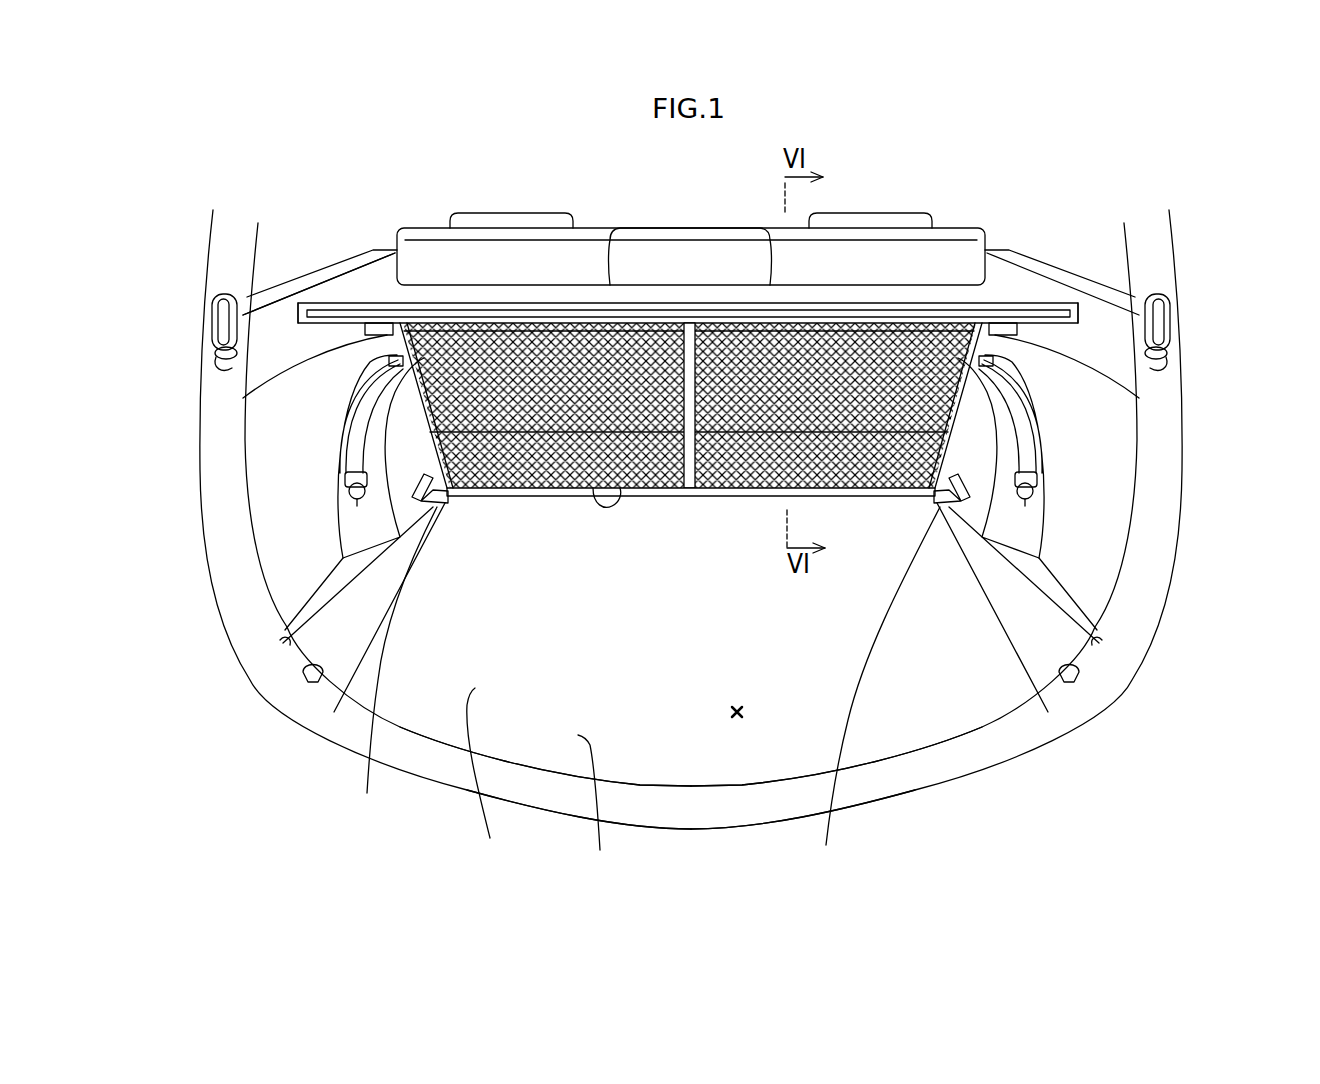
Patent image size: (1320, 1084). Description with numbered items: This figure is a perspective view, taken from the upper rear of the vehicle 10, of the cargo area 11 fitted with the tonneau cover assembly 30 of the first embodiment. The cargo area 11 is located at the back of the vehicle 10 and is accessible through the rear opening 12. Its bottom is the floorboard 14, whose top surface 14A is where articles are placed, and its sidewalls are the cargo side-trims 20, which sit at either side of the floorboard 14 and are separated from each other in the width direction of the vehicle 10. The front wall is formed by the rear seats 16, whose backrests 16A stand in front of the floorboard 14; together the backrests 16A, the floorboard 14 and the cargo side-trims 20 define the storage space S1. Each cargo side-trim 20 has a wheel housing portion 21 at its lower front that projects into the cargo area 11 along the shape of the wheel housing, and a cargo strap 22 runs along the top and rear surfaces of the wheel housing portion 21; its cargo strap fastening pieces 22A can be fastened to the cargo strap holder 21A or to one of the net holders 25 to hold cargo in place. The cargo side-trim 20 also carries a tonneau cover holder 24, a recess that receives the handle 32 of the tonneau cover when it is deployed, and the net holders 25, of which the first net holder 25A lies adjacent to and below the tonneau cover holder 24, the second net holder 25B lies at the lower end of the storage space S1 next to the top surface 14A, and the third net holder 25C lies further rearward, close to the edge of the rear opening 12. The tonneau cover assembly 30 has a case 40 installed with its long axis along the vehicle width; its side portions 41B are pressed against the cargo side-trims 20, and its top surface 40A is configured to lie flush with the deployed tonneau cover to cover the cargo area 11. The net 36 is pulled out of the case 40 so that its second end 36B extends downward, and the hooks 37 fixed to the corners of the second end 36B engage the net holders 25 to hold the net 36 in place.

The vehicle 10 is at (1206, 290).
The cargo area 11 is at (881, 732).
The rear opening 12 is at (976, 745).
The floorboard 14 is at (484, 778).
The top surface 14A is at (598, 808).
The rear seats 16 is at (939, 225).
The backrests 16A is at (722, 228).
The cargo side-trims 20 is at (277, 558).
The wheel housing portion 21 is at (410, 433).
The cargo strap holder 21A is at (362, 498).
The cargo strap 22 is at (363, 408).
The cargo strap fastening pieces 22A is at (343, 482).
The tonneau cover holder 24 is at (217, 320).
The net holders 25 is at (690, 577).
The first net holder 25A is at (208, 380).
The second net holder 25B is at (285, 642).
The third net holder 25C is at (323, 690).
The tonneau cover assembly 30 is at (1018, 289).
The handle 32 is at (330, 312).
The net 36 is at (658, 363).
The second end 36B is at (593, 487).
The hooks 37 is at (647, 691).
The case 40 is at (387, 253).
The top surface 40A is at (357, 295).
The side portions 41B is at (300, 313).
The storage space S1 is at (736, 720).